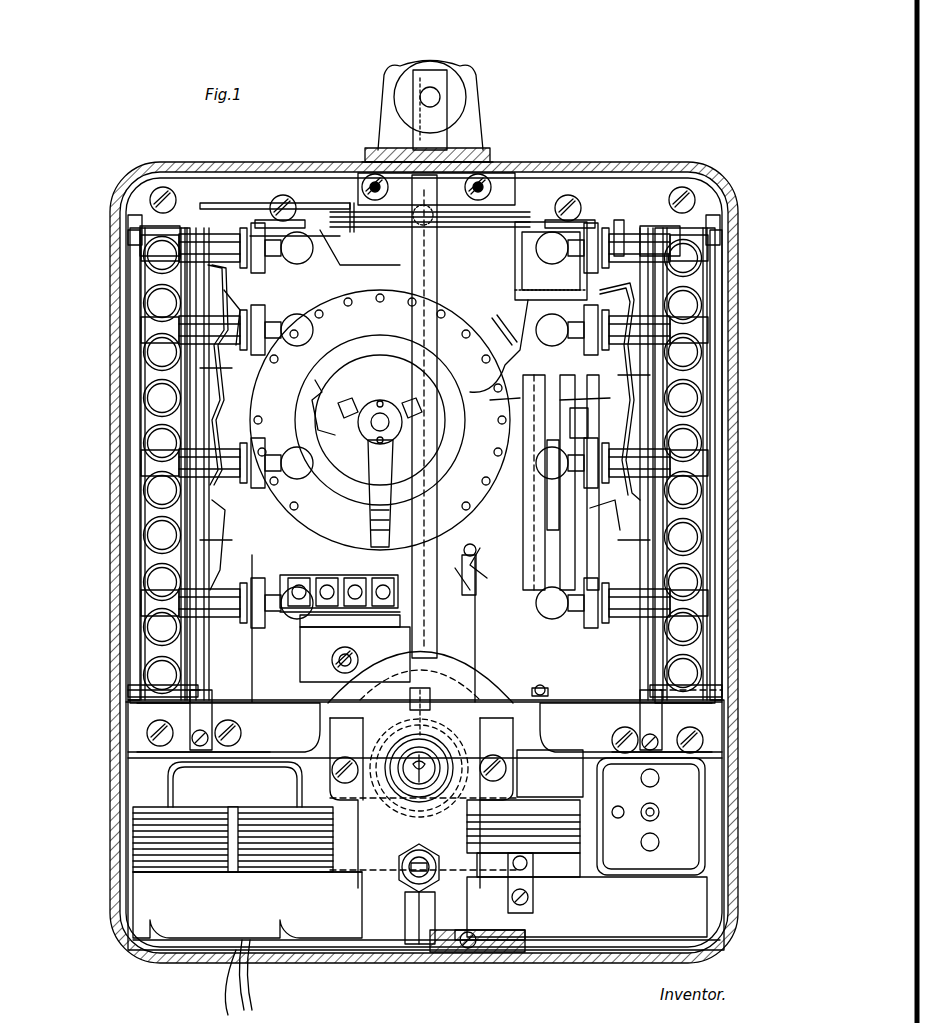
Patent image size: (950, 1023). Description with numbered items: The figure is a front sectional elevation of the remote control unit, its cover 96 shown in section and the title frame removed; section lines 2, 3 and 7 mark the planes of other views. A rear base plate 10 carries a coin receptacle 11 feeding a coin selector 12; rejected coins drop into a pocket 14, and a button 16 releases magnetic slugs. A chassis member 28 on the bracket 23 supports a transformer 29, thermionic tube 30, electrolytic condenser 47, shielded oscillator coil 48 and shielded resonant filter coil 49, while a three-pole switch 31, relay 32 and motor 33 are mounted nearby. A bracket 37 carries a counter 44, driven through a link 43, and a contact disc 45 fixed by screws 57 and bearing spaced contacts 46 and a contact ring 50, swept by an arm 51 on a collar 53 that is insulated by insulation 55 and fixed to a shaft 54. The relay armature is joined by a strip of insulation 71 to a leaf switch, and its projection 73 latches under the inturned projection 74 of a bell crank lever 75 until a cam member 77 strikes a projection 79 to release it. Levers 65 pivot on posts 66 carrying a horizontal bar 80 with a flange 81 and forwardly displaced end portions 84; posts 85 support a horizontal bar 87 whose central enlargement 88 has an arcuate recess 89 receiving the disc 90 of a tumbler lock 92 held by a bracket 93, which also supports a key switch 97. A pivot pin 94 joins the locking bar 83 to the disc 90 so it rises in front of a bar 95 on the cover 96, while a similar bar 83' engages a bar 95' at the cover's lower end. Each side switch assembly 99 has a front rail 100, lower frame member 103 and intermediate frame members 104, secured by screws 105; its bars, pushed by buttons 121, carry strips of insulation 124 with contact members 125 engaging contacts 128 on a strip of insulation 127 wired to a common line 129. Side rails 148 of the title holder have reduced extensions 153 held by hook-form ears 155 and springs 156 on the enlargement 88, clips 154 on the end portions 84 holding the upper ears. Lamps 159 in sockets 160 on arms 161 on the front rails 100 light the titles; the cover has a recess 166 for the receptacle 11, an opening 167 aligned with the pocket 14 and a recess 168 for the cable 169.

The section line 2 is at (792, 178).
The section line 3 is at (70, 415).
The section line 7 is at (415, 24).
The rear base plate 10 is at (730, 505).
The coin receiving receptacle 11 is at (470, 95).
The coin selector 12 is at (638, 385).
The rejected coin pocket 14 is at (128, 712).
The button 16 is at (448, 130).
The bracket 23 is at (477, 592).
The chassis member 28 is at (247, 905).
The transformer 29 is at (205, 848).
The thermionic tube 30 is at (350, 702).
The three-pole switch 31 is at (490, 215).
The relay 32 is at (551, 261).
The motor 33 is at (548, 560).
The bracket 37 is at (330, 660).
The link 43 is at (222, 550).
The counter 44 is at (343, 590).
The contact disc 45 is at (380, 420).
The contacts 46 is at (340, 262).
The electrolytic condenser 47 is at (560, 835).
The shielded oscillator coil 48 is at (535, 725).
The shielded resonant filter coil 49 is at (690, 812).
The contact ring 50 is at (385, 352).
The arm 51 is at (370, 510).
The collar 53 is at (392, 400).
The shaft 54 is at (465, 428).
The insulation 55 is at (320, 425).
The screws 57 is at (318, 380).
The levers 65 is at (300, 220).
The posts 66 is at (283, 195).
The strip of insulation 71 is at (495, 346).
The projection 73 is at (590, 300).
The inwardly turned projection 74 is at (510, 300).
The bell crank lever 75 is at (494, 397).
The cam member 77 is at (588, 430).
The projection 79 is at (593, 393).
The horizontal bar 80 is at (357, 191).
The horizontal flange 81 is at (352, 203).
The locking bar 83 is at (404, 416).
The locking bar 83' is at (426, 926).
The end portions 84 is at (200, 190).
The posts 85 is at (243, 738).
The horizontal bar 87 is at (552, 740).
The central enlargement 88 is at (460, 680).
The arcuate recess 89 is at (440, 712).
The disc 90 is at (398, 735).
The tumbler lock 92 is at (410, 798).
The bracket 93 is at (421, 803).
The pivot pin 94 is at (524, 684).
The bar 95 is at (436, 173).
The bar 95' is at (401, 952).
The cover 96 is at (720, 300).
The switch 97 is at (410, 950).
The switch assembly 99 is at (135, 500).
The front rail 100 is at (150, 418).
The lower frame member 103 is at (128, 690).
The intermediate frame members 104 is at (148, 555).
The screws 105 is at (150, 205).
The button 121 is at (140, 290).
The strip of insulation 124 is at (148, 362).
The contact member 125 is at (640, 642).
The strip of insulation 127 is at (225, 300).
The contacts 128 is at (403, 431).
The common line 129 is at (410, 241).
The side rails 148 is at (128, 688).
The reduced extensions 153 is at (128, 760).
The clips 154 is at (128, 232).
The hook-form ears 155 is at (128, 752).
The springs 156 is at (210, 715).
The lamps 159 is at (296, 315).
The sockets 160 is at (248, 232).
The arms 161 is at (205, 232).
The recess 166 is at (385, 148).
The opening 167 is at (128, 772).
The recess 168 is at (261, 975).
The cable 169 is at (200, 982).